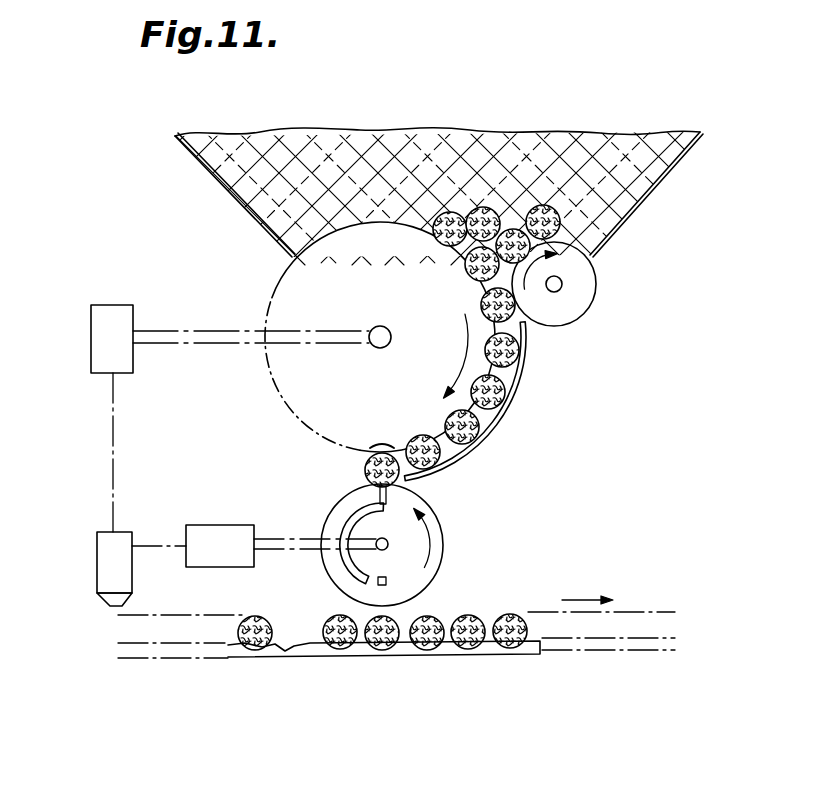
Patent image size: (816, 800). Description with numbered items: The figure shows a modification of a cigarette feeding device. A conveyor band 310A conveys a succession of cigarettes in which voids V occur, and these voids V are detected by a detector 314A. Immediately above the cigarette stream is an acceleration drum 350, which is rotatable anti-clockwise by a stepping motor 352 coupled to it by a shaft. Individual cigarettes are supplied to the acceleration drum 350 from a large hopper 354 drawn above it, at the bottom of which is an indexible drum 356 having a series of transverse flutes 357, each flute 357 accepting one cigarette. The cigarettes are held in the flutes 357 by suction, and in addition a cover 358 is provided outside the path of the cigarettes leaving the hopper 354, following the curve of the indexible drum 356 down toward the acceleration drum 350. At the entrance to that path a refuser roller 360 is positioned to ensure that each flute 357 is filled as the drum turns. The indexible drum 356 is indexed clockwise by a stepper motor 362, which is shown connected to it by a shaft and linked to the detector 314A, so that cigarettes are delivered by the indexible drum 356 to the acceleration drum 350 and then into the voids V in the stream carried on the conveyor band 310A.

The hopper 354 is at (655, 186).
The indexible drum 356 is at (388, 279).
The refuser roller 360 is at (596, 283).
The cover 358 is at (519, 377).
The transverse flute 357 is at (381, 446).
The acceleration drum 350 is at (436, 533).
The stepping motor 352 is at (240, 525).
The stepper motor 362 is at (124, 305).
The detector 314A is at (103, 563).
The conveyor band 310A is at (475, 652).
The void V is at (294, 647).